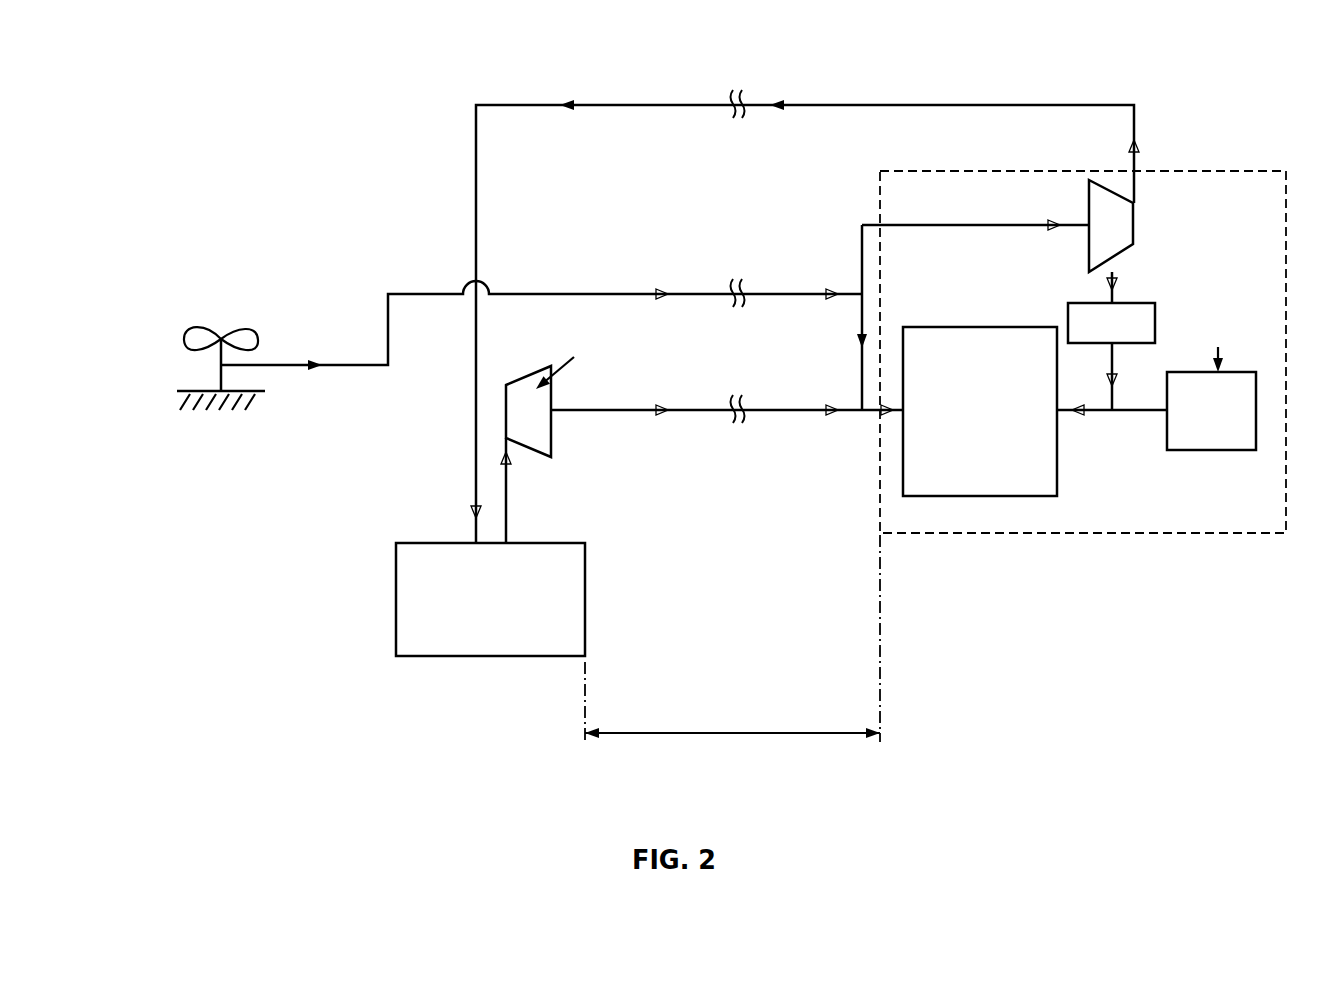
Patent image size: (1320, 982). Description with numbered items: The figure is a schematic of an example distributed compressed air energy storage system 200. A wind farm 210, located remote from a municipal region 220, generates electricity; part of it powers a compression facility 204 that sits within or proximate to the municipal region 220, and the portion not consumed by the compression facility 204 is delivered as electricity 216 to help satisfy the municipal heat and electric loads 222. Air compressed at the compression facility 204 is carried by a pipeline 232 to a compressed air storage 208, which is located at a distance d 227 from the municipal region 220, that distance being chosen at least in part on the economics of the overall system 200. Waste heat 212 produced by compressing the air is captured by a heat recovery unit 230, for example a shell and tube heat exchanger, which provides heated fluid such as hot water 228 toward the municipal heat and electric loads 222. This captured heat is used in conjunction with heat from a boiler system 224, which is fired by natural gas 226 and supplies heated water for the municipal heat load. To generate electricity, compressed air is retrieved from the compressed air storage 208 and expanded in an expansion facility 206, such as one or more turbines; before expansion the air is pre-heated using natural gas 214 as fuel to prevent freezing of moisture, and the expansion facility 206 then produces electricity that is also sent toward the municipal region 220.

The overall system 200 is at (300, 80).
The compression facility 204 is at (1092, 208).
The expansion facility 206 is at (513, 414).
The compressed air storage 208 is at (462, 543).
The wind farm 210 is at (186, 338).
The waste heat 212 is at (1148, 262).
The natural gas 214 is at (602, 342).
The electricity 216 is at (870, 413).
The municipal region 220 is at (948, 170).
The municipal heat and electric loads 222 is at (966, 327).
The boiler system 224 is at (1230, 450).
The natural gas supply to boiler 226 is at (1222, 312).
The distance d 227 is at (733, 736).
The hot water 228 is at (1112, 448).
The heat recovery unit 230 is at (1093, 303).
The pipeline 232 is at (926, 78).